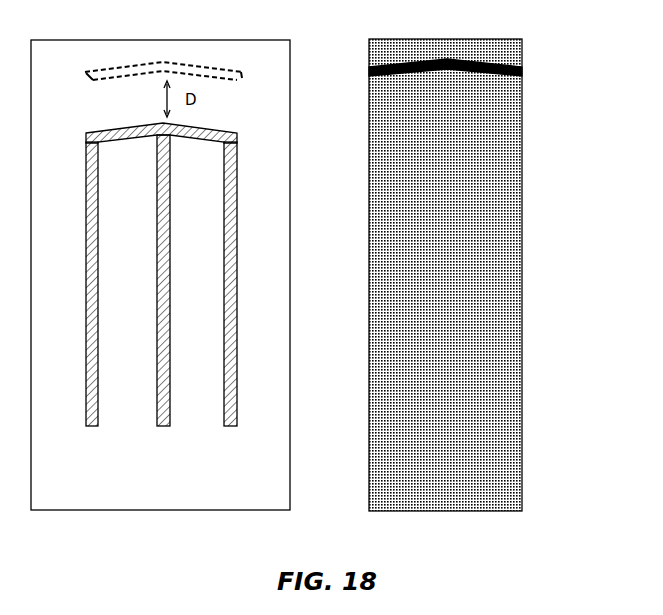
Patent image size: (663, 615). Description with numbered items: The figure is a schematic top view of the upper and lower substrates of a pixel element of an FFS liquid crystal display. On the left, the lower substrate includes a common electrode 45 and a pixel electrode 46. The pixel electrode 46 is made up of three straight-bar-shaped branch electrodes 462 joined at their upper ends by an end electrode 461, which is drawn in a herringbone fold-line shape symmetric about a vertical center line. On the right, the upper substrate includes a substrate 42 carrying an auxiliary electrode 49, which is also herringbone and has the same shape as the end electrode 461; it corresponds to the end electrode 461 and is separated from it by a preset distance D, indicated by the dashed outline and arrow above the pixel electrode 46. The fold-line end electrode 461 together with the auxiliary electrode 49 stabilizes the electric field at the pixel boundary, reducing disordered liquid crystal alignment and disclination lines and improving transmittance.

The common electrode 45 is at (202, 48).
The auxiliary electrode 49 is at (125, 66).
The pixel electrode 46 is at (210, 259).
The end electrode 461 is at (205, 128).
The branch electrode 462 is at (232, 209).
The substrate 42 is at (392, 40).